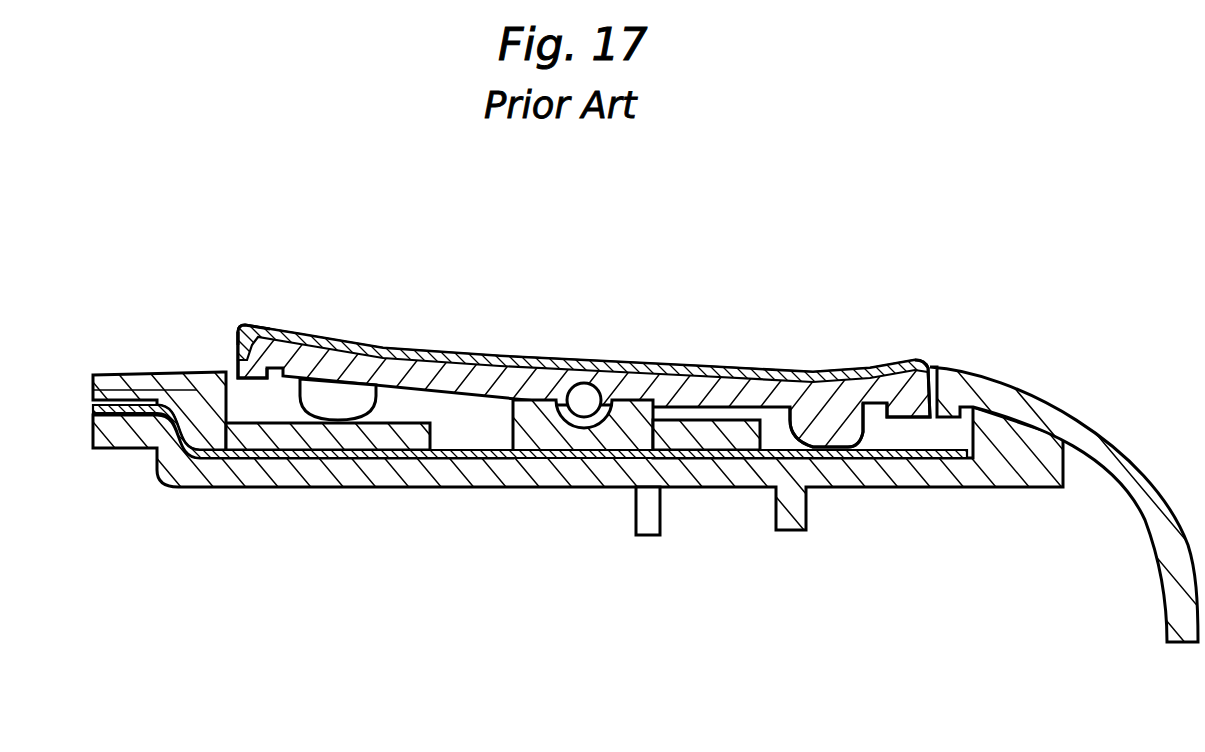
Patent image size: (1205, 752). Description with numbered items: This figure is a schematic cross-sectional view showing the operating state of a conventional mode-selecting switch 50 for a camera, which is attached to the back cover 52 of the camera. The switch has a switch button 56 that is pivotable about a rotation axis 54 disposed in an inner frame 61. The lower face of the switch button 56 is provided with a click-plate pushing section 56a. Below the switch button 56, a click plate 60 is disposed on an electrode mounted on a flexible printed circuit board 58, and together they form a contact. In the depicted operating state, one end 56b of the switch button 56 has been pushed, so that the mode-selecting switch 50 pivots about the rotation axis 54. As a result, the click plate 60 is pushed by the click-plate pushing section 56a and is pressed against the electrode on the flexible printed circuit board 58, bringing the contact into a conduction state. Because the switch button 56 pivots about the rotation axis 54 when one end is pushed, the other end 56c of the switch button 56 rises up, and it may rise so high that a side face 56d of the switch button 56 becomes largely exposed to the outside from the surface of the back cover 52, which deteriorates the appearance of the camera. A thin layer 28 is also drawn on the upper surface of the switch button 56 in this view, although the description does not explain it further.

The mode-selecting switch 50 is at (689, 300).
The back cover 52 is at (128, 383).
The rotation axis 54 is at (584, 398).
The switch button 56 is at (492, 378).
The click-plate pushing section 56a is at (873, 450).
The one end of the switch button 56b is at (862, 372).
The other end of the switch button 56c is at (268, 327).
The side face of the switch button 56d is at (238, 343).
The key sheet layer 28 is at (405, 345).
The flexible printed circuit board 58 is at (857, 453).
The click plate 60 is at (760, 455).
The inner frame 61 is at (1015, 465).